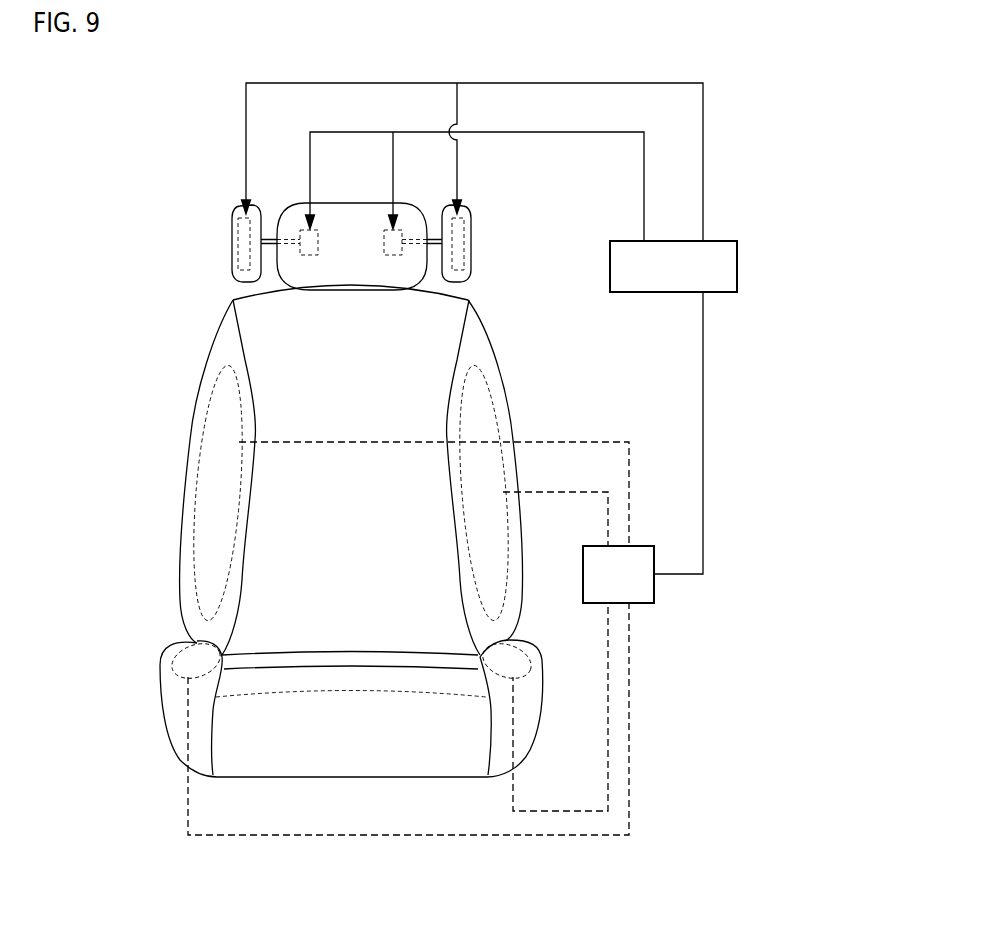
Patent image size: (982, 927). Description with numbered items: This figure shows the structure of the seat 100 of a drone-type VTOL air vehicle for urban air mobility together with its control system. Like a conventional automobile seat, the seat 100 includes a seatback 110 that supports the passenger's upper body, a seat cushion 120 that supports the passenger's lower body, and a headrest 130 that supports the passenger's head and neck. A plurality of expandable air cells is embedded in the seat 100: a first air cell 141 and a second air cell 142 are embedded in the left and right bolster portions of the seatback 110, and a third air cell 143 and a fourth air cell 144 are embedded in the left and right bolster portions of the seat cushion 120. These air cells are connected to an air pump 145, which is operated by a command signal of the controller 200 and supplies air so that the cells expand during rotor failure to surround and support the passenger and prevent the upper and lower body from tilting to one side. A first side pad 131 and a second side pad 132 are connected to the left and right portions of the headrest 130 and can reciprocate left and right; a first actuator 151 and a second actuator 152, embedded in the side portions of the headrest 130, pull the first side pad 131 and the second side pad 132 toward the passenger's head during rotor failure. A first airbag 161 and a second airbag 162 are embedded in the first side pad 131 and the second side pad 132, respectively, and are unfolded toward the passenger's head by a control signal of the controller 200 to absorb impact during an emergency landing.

The seat 100 is at (165, 416).
The seatback 110 is at (218, 338).
The seat cushion 120 is at (160, 700).
The headrest 130 is at (345, 206).
The first side pad 131 is at (196, 249).
The second side pad 132 is at (500, 226).
The first air cell 141 is at (200, 488).
The second air cell 142 is at (488, 400).
The third air cell 143 is at (180, 642).
The fourth air cell 144 is at (532, 641).
The air pump 145 is at (654, 592).
The first actuator 151 is at (320, 233).
The second actuator 152 is at (402, 233).
The first airbag 161 is at (241, 249).
The second airbag 162 is at (464, 238).
The controller 200 is at (737, 262).